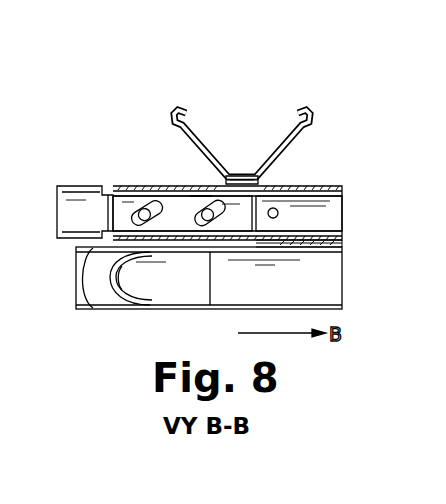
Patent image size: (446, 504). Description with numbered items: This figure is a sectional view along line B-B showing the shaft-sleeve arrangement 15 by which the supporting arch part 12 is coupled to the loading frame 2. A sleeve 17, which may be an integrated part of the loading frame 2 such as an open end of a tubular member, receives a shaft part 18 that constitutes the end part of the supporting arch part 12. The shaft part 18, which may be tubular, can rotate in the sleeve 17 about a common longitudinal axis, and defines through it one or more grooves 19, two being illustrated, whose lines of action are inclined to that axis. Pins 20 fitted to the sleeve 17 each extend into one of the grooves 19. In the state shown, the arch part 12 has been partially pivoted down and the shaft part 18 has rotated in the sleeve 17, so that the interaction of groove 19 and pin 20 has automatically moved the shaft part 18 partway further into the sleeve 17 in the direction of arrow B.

The loading frame 2 is at (306, 186).
The supporting arch part 12 is at (55, 199).
The shaft-sleeve arrangement 15 is at (104, 139).
The sleeve 17 is at (174, 212).
The shaft part 18 is at (191, 191).
The groove 19 is at (170, 234).
The pin 20 is at (140, 204).